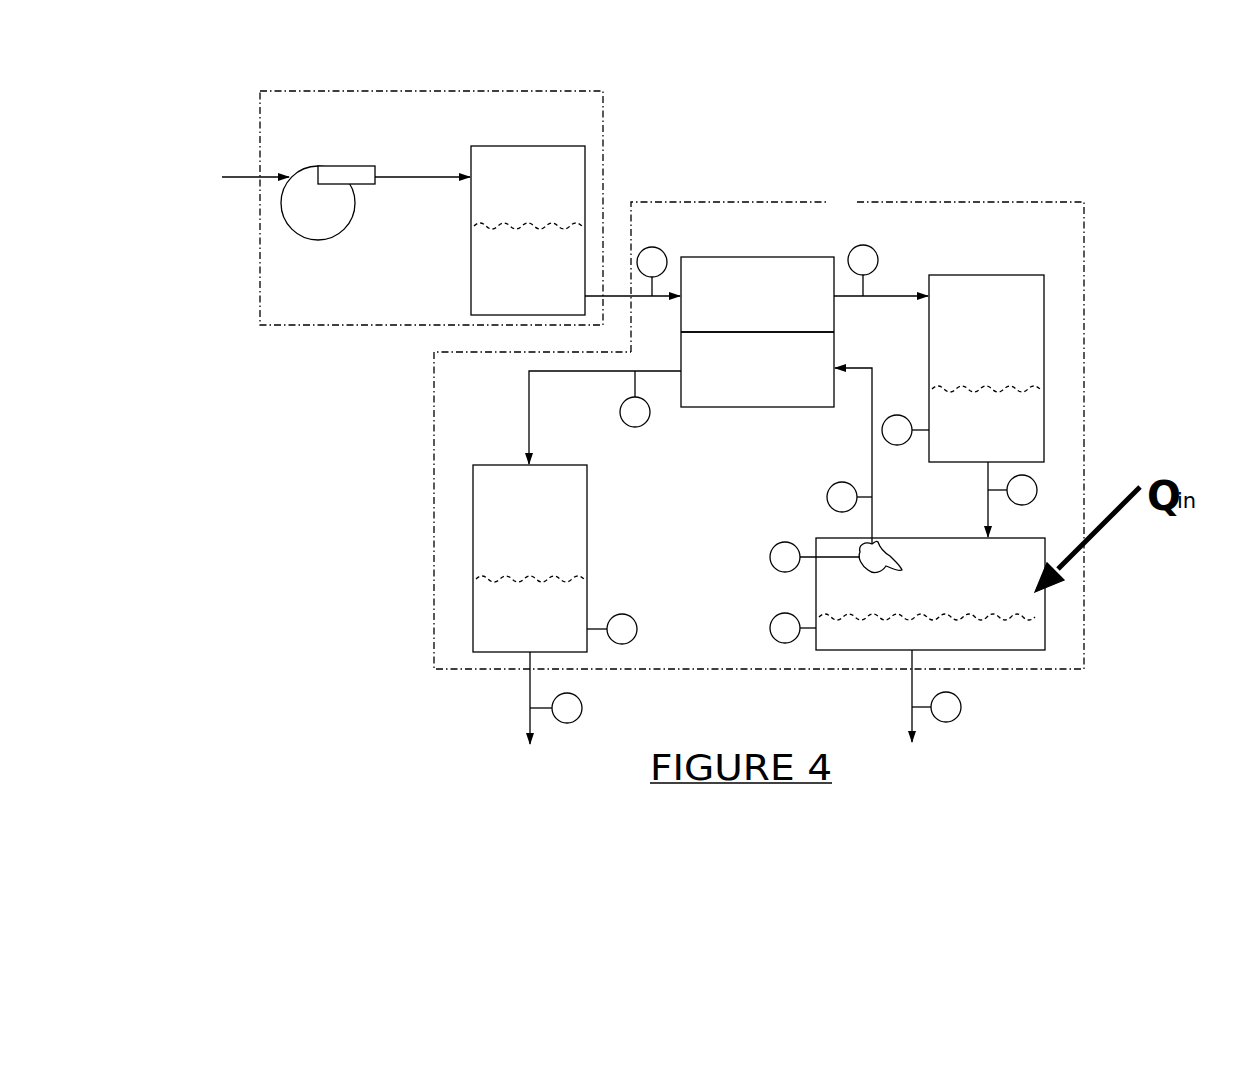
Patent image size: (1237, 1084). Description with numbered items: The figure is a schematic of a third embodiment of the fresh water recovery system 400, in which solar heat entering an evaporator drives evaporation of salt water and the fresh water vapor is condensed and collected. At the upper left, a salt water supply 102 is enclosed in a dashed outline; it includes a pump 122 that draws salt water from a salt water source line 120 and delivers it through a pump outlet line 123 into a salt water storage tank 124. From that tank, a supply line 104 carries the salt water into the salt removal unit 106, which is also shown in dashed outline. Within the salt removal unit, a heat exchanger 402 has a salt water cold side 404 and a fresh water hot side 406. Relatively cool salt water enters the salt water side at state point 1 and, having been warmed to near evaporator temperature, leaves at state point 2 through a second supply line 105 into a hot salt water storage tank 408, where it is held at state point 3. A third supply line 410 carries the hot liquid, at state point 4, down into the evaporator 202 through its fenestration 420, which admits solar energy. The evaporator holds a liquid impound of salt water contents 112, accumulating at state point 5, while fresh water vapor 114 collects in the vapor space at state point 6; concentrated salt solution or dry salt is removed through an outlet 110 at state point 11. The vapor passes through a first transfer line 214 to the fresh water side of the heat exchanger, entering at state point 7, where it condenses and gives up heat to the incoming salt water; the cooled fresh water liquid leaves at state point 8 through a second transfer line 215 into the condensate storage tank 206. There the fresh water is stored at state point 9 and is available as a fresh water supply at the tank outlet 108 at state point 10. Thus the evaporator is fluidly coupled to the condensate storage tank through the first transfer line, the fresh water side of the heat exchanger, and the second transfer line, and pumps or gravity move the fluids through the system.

The fresh water recovery system 400 is at (866, 136).
The salt water supply 102 is at (603, 125).
The supply line 104 is at (613, 293).
The salt removal unit 106 is at (433, 445).
The salt water source line 120 is at (242, 177).
The pump 122 is at (300, 219).
The pump outlet line 123 is at (393, 177).
The salt water storage tank 124 is at (510, 210).
The heat exchanger 402 is at (757, 311).
The salt water side 404 is at (739, 305).
The fresh water side 406 is at (739, 380).
The second supply line 105 is at (892, 296).
The hot salt water storage tank 408 is at (969, 323).
The third supply line 410 is at (988, 468).
The first transfer line 214 is at (872, 423).
The second transfer line 215 is at (529, 427).
The condensate storage tank 206 is at (512, 513).
The evaporator 202 is at (997, 566).
The fenestration 420 is at (902, 537).
The fresh water vapor 114 is at (893, 560).
The condensate outlet 108 is at (530, 679).
The concentrate outlet 110 is at (912, 675).
The salt water contents 112 is at (1025, 630).
The state point 1 is at (652, 271).
The state point 2 is at (863, 270).
The state point 3 is at (905, 430).
The state point 4 is at (1012, 490).
The state point 5 is at (793, 628).
The state point 6 is at (815, 557).
The state point 7 is at (849, 497).
The state point 8 is at (635, 399).
The state point 9 is at (612, 629).
The state point 10 is at (556, 708).
The state point 11 is at (936, 707).